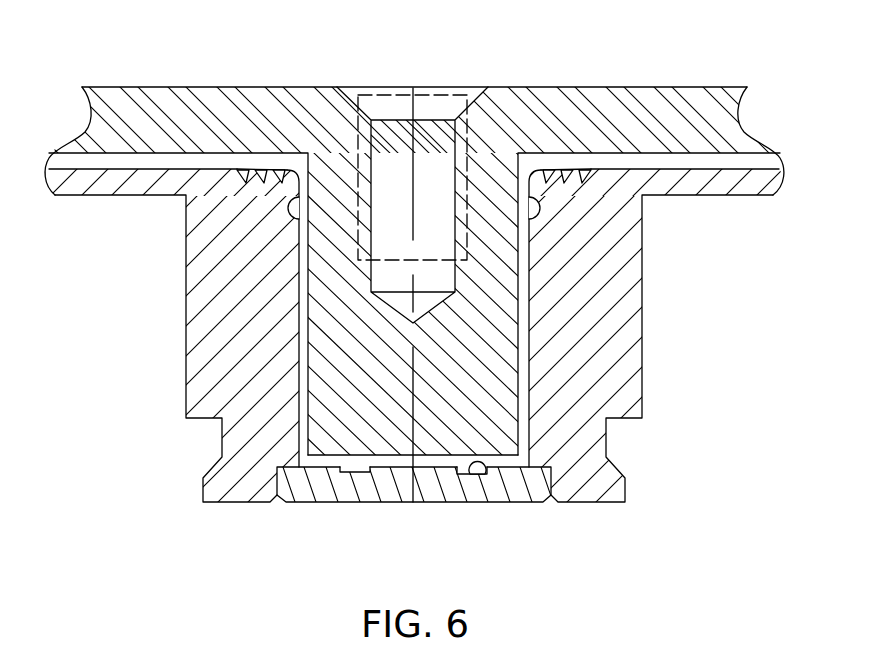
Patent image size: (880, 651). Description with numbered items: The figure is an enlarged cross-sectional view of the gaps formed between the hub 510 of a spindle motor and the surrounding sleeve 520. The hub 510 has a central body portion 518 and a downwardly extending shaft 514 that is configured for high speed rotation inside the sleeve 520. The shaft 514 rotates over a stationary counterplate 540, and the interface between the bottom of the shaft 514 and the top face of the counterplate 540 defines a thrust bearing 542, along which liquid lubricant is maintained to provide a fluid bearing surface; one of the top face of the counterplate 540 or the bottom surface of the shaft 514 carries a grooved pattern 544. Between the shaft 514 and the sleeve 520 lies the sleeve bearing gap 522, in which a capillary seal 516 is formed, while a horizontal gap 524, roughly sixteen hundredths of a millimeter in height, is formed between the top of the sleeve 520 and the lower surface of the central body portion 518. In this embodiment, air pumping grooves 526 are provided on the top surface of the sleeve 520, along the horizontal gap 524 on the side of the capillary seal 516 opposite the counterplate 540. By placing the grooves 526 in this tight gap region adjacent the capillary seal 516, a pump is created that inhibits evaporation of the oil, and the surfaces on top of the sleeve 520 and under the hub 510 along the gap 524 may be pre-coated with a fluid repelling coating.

The hub 510 is at (218, 82).
The shaft 514 is at (490, 260).
The capillary seal 516 is at (533, 208).
The central body portion 518 is at (664, 107).
The sleeve 520 is at (613, 350).
The gap 522 is at (303, 294).
The gap 524 is at (123, 160).
The air pumping grooves 526 is at (258, 172).
The counterplate 540 is at (383, 486).
The thrust bearing 542 is at (319, 469).
The grooved pattern 544 is at (487, 473).